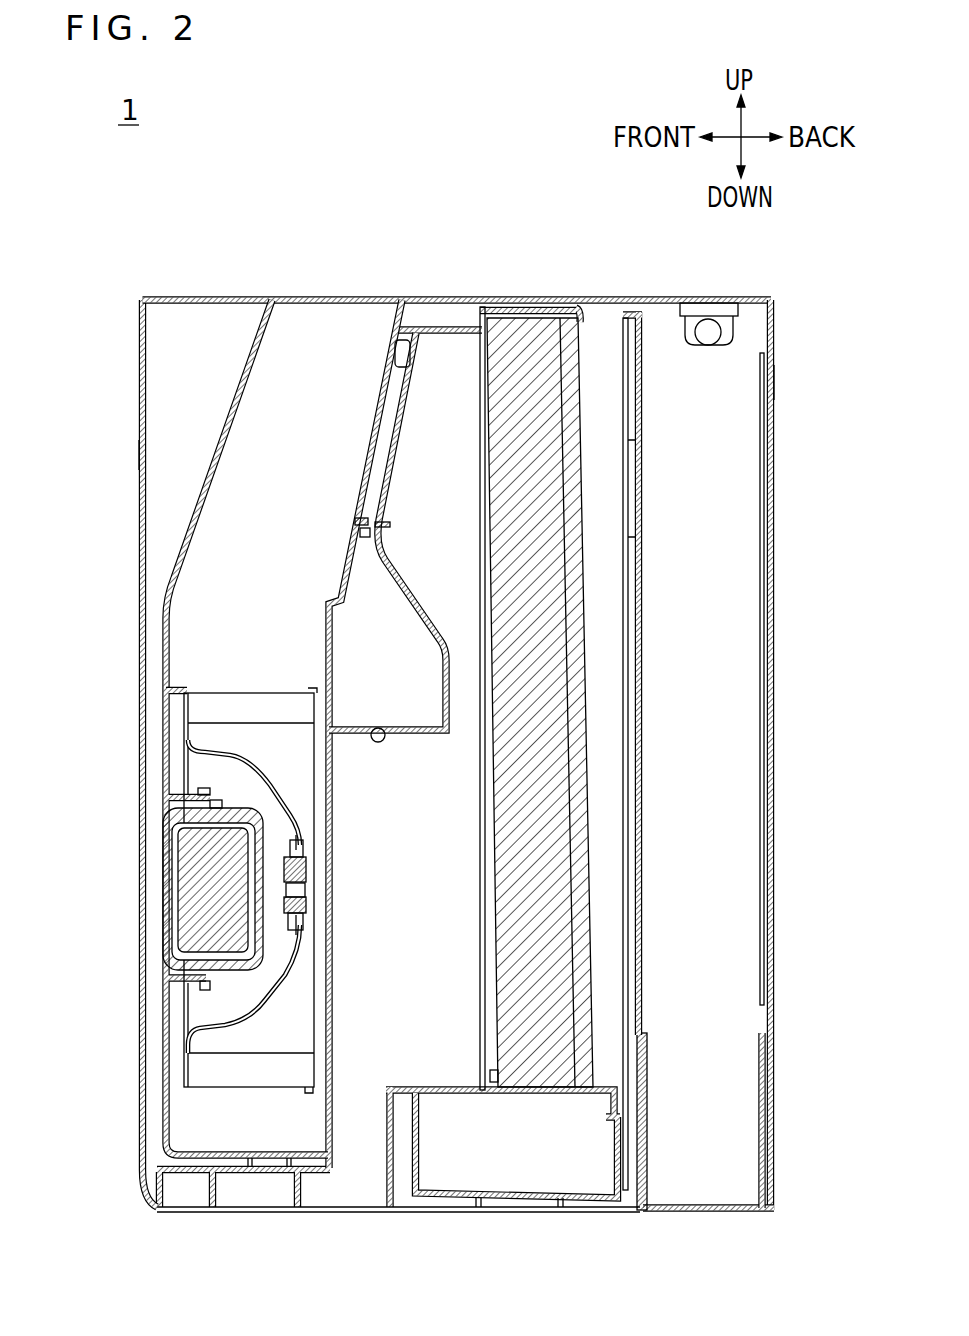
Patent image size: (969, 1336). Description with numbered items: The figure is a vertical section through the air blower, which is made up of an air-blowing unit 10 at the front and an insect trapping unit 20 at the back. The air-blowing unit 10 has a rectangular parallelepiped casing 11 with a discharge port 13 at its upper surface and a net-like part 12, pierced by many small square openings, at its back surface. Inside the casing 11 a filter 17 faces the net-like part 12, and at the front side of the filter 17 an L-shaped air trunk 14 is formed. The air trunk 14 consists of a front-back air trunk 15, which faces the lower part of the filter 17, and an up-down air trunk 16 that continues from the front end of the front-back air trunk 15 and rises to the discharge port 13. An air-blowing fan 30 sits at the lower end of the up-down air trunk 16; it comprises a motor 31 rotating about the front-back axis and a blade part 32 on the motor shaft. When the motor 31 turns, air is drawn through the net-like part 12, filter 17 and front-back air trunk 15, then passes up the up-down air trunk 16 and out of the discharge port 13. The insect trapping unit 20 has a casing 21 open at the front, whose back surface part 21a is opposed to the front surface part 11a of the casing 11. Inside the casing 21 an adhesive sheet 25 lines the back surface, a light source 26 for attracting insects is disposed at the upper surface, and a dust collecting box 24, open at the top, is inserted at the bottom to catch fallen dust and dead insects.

The air-blowing unit 10 is at (140, 683).
The casing 11 is at (143, 415).
The front surface part 11a is at (143, 453).
The net-like part 12 is at (646, 323).
The discharge port 13 is at (273, 298).
The air trunk 14 is at (447, 790).
The front-back air trunk 15 is at (385, 722).
The up-down air trunk 16 is at (240, 408).
The filter 17 is at (502, 452).
The insect trapping unit 20 is at (775, 592).
The casing 21 is at (790, 453).
The back surface part 21a is at (777, 381).
The dust collecting box 24 is at (647, 1088).
The adhesive sheet 25 is at (762, 822).
The light source 26 is at (710, 345).
The air-blowing fan 30 is at (157, 953).
The motor 31 is at (185, 893).
The blade part 32 is at (238, 707).